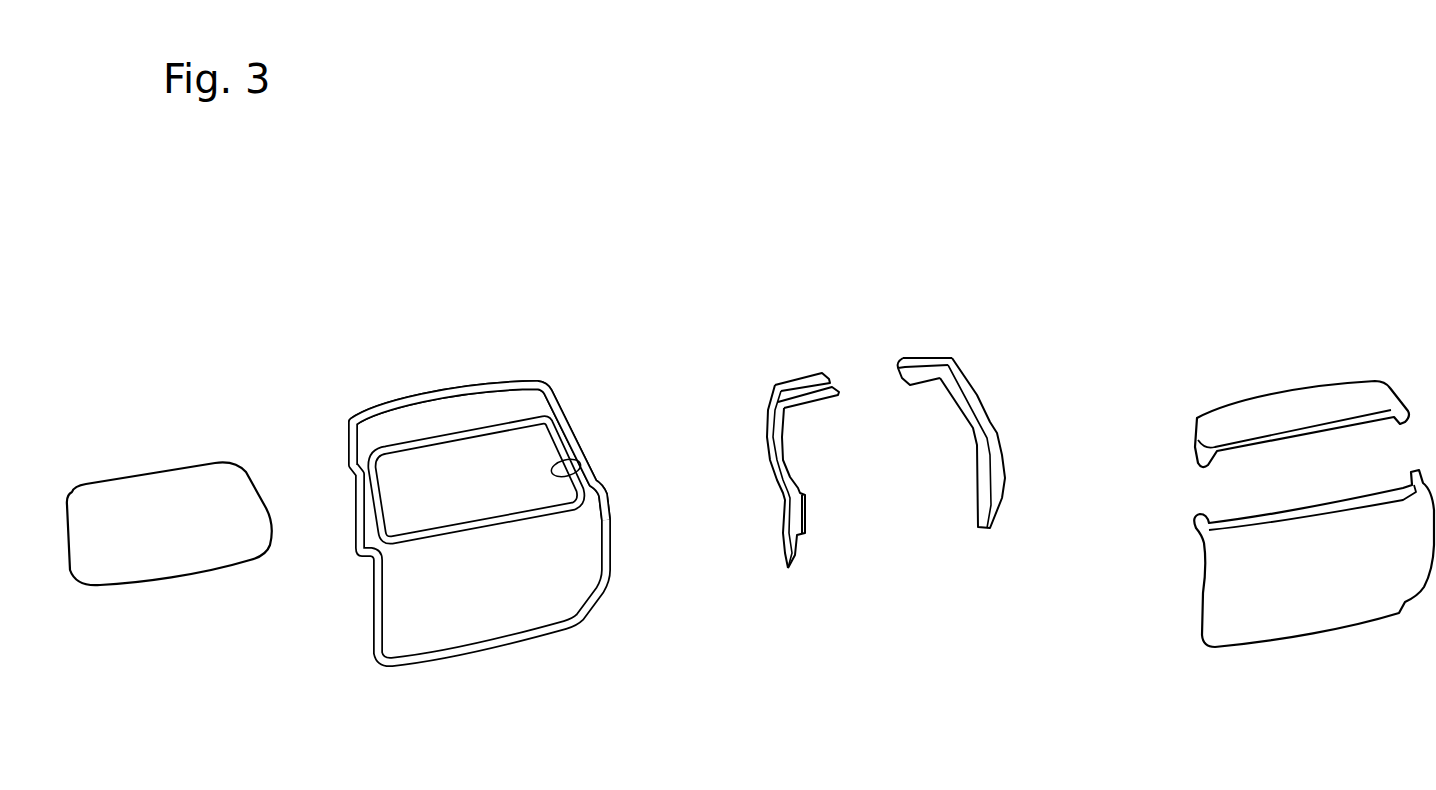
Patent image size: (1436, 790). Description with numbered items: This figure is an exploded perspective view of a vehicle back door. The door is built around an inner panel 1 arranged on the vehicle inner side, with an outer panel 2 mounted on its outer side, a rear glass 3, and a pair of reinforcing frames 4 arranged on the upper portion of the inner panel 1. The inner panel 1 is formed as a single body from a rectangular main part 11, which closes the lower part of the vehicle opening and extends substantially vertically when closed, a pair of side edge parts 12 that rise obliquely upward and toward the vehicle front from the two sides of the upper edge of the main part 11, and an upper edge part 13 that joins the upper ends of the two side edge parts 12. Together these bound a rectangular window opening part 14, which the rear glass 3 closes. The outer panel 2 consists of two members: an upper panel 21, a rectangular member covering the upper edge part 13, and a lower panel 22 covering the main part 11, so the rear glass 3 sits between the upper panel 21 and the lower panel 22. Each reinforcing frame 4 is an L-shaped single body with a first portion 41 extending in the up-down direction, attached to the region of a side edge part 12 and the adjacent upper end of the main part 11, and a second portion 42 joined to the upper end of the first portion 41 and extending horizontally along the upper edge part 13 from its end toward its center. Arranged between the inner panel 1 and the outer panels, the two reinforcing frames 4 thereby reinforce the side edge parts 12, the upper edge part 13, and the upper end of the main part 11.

The inner panel 1 is at (447, 501).
The door trim panel 2 is at (1238, 510).
The rear glass 3 is at (148, 498).
The reinforcing frame 4 is at (895, 431).
The main part 11 is at (422, 597).
The side edge part 12 is at (565, 443).
The upper edge part 13 is at (478, 403).
The window opening part 14 is at (560, 473).
The upper panel 21 is at (1327, 403).
The lower panel 22 is at (1323, 620).
The first portion 41 is at (772, 442).
The second portion 42 is at (808, 375).